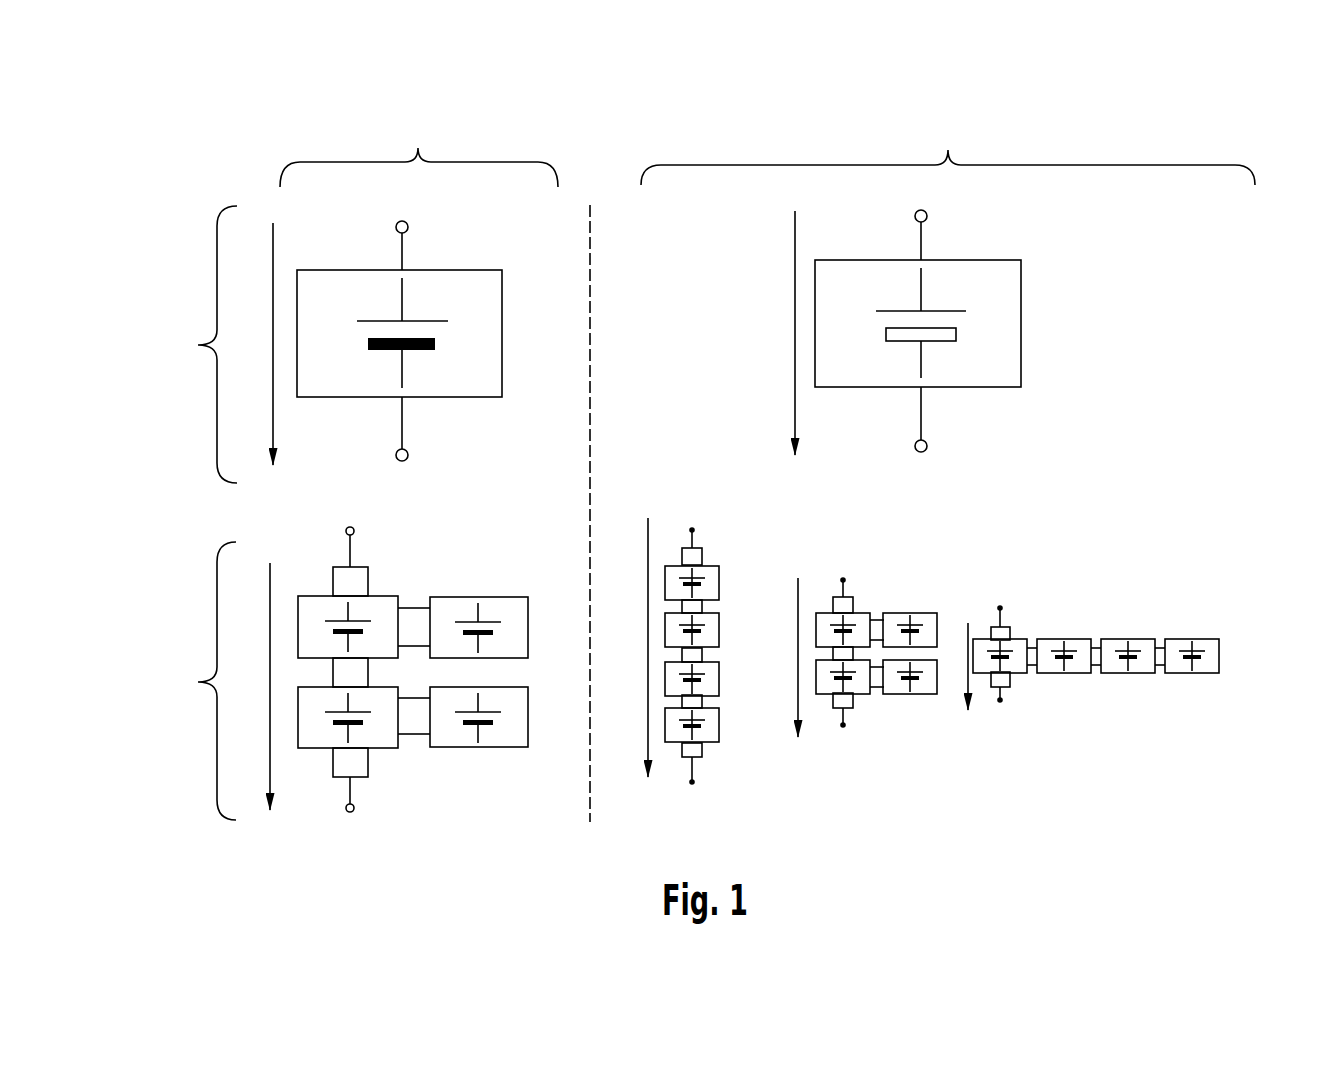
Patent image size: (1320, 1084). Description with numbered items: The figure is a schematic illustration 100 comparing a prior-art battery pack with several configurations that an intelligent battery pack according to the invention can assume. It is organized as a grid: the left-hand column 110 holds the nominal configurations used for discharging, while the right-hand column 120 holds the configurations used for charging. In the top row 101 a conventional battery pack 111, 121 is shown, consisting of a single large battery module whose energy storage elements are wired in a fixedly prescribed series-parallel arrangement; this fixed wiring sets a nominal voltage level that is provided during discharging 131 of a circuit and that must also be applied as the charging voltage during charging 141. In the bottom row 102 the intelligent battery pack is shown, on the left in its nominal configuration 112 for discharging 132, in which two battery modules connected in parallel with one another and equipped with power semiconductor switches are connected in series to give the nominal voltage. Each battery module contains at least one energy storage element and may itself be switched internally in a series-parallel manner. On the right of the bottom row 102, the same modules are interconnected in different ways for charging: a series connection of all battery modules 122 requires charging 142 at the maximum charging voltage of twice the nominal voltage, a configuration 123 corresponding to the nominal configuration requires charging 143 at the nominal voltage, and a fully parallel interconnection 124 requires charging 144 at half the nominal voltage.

The schematic illustration 100 is at (243, 168).
The left-hand column 110 is at (419, 150).
The right-hand column 120 is at (948, 147).
The top row 101 is at (194, 344).
The bottom row 102 is at (194, 681).
The conventional battery pack 111 is at (463, 407).
The nominal configuration 112 is at (437, 756).
The conventional battery pack 121 is at (1038, 304).
The series connection of all battery modules 122 is at (712, 548).
The configuration corresponding to the nominal configuration 123 is at (892, 598).
The fully parallel interconnection 124 is at (1059, 622).
The discharging 131 is at (284, 410).
The discharging 132 is at (276, 742).
The charging 141 is at (788, 363).
The charging 142 is at (643, 708).
The charging 143 is at (793, 683).
The charging 144 is at (963, 678).